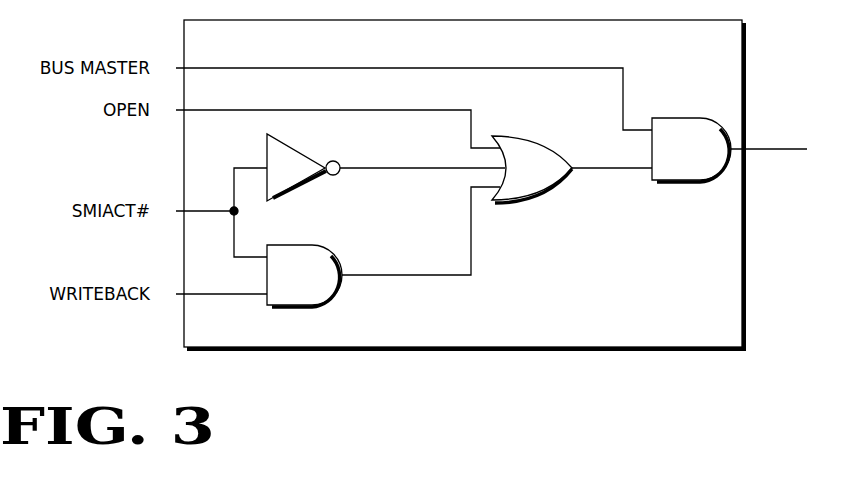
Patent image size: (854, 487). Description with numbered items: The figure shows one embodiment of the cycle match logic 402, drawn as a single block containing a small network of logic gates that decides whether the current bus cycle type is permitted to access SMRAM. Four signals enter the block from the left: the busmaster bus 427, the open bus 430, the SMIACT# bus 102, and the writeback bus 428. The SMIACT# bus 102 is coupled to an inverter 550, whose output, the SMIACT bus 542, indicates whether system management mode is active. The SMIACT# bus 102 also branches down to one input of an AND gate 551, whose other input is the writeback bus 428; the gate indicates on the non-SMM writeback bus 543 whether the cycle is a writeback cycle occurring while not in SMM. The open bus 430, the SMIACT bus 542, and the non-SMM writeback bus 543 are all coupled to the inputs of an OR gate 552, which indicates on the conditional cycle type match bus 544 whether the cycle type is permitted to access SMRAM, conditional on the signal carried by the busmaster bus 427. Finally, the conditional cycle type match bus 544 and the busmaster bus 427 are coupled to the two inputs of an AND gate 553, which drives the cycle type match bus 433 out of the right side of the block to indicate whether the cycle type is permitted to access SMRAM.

The cycle match logic 402 is at (733, 339).
The busmaster bus 427 is at (246, 64).
The open bus 430 is at (265, 107).
The SMIACT# signal line 102 is at (201, 208).
The writeback bus 428 is at (200, 291).
The inverter 550 is at (300, 177).
The SMIACT bus 542 is at (375, 167).
The AND gate 551 is at (312, 284).
The non-SMM writeback bus 543 is at (386, 272).
The OR gate 552 is at (548, 177).
The conditional cycle type match bus 544 is at (602, 168).
The AND gate 553 is at (698, 158).
The cycle type match bus 433 is at (758, 151).